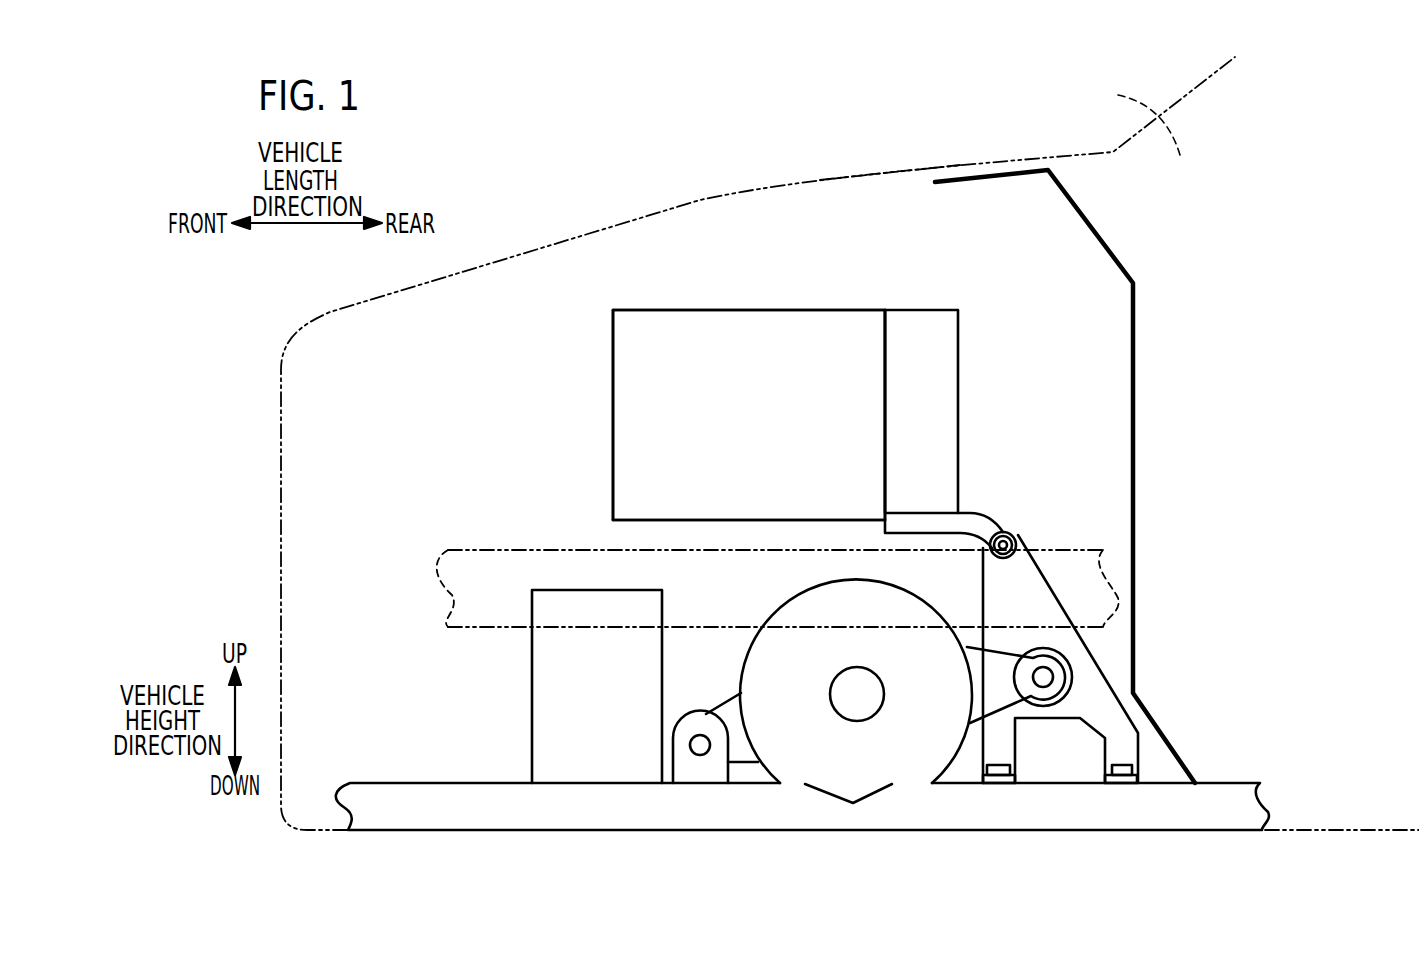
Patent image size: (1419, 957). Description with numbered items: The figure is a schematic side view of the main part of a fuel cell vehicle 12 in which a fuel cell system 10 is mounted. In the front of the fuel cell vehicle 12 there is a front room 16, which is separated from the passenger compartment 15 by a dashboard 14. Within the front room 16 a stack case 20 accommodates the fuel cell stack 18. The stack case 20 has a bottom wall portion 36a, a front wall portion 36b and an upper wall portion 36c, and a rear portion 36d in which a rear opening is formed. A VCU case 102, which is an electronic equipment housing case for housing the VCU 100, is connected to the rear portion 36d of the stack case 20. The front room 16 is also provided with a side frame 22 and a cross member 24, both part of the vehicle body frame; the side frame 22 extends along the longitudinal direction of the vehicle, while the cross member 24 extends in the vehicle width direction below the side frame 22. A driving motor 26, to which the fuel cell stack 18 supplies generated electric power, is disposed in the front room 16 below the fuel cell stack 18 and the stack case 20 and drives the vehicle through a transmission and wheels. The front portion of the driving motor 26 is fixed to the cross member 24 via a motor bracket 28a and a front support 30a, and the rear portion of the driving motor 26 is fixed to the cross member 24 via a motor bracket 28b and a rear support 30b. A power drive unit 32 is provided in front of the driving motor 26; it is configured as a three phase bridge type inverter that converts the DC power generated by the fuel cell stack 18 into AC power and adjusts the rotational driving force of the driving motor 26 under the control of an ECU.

The fuel cell system 10 is at (771, 424).
The fuel cell vehicle 12 is at (278, 314).
The dashboard 14 is at (1133, 315).
The passenger compartment 15 is at (1136, 117).
The front room 16 is at (871, 210).
The fuel cell stack 18 is at (640, 428).
The stack case 20 is at (640, 477).
The side frame 22 is at (483, 565).
The cross member 24 is at (410, 797).
The driving motor 26 is at (898, 772).
The motor bracket 28a is at (727, 713).
The motor bracket 28b is at (993, 672).
The front support 30a is at (686, 760).
The rear support 30b is at (1090, 677).
The power drive unit 32 is at (532, 678).
The bottom wall portion 36a is at (718, 520).
The front wall portion 36b is at (612, 343).
The upper wall portion 36c is at (722, 310).
The rear portion 36d is at (885, 382).
The VCU 100 is at (920, 433).
The VCU case 102 is at (933, 307).